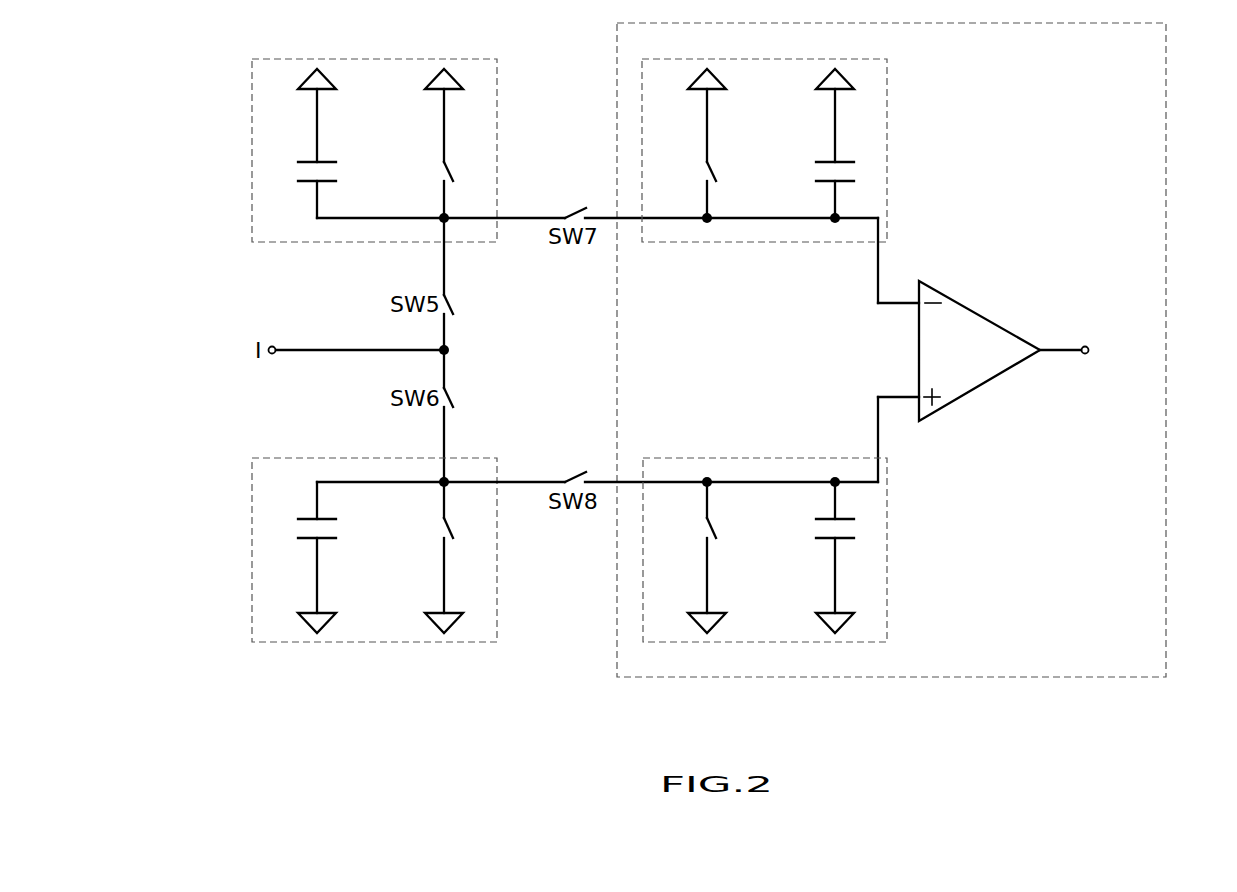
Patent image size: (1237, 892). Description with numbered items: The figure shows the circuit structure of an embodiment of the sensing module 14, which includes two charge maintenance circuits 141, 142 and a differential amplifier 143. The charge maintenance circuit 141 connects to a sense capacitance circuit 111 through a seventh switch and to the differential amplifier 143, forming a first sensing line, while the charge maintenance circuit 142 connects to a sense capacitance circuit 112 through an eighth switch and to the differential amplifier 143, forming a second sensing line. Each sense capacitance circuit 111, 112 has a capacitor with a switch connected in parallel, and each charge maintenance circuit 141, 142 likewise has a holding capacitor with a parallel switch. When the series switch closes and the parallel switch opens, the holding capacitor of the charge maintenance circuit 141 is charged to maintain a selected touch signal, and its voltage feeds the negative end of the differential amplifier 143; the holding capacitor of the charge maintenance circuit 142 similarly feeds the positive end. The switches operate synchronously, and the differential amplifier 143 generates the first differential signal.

The sensing module 14 is at (1172, 53).
The sense capacitance circuit 111 is at (252, 79).
The sense capacitance circuit 112 is at (252, 625).
The charge maintenance circuit 141 is at (887, 79).
The charge maintenance circuit 142 is at (887, 622).
The differential amplifier 143 is at (982, 310).